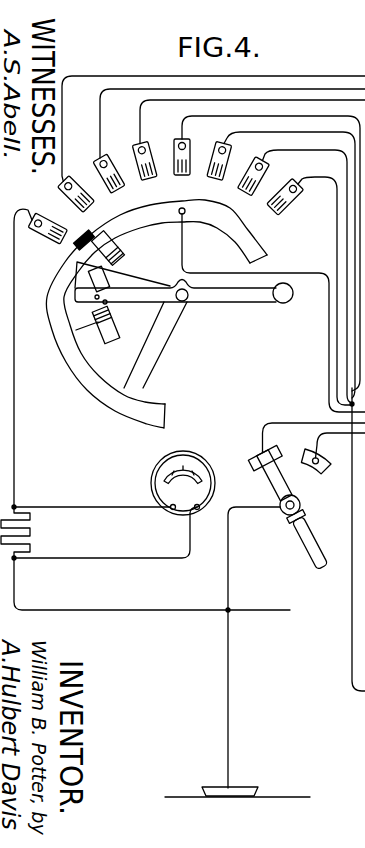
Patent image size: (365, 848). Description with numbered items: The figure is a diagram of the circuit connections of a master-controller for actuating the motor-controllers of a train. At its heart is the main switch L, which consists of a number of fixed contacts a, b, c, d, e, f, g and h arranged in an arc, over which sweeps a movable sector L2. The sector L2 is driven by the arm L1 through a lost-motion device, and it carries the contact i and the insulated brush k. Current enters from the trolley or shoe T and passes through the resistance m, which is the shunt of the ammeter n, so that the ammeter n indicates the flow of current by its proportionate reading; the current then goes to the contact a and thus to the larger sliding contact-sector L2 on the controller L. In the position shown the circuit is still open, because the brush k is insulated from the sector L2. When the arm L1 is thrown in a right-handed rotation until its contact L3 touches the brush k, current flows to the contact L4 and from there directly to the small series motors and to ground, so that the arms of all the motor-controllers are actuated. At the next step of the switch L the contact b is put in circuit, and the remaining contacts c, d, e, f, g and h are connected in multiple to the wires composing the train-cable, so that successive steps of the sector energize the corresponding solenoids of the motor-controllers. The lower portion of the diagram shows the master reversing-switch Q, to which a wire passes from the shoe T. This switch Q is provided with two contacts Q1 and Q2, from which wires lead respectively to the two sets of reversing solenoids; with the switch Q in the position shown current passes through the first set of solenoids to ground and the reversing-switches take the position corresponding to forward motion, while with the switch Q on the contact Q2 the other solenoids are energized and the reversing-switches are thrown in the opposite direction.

The fixed contact a is at (52, 240).
The fixed contact b is at (211, 156).
The fixed contact c is at (229, 151).
The fixed contact d is at (248, 152).
The fixed contact e is at (267, 253).
The fixed contact f is at (277, 265).
The fixed contact g is at (291, 276).
The fixed contact h is at (302, 291).
The contact i is at (95, 338).
The insulated brush k is at (126, 256).
The main switch L is at (175, 325).
The arm L1 is at (283, 303).
The movable sector L2 is at (78, 378).
The contact L3 is at (118, 321).
The contact L4 is at (165, 213).
The shunt resistance m is at (27, 532).
The ammeter n is at (152, 482).
The master reversing-switch Q is at (300, 503).
The contact Q1 is at (252, 457).
The contact Q2 is at (310, 452).
The trolley or shoe T is at (236, 788).